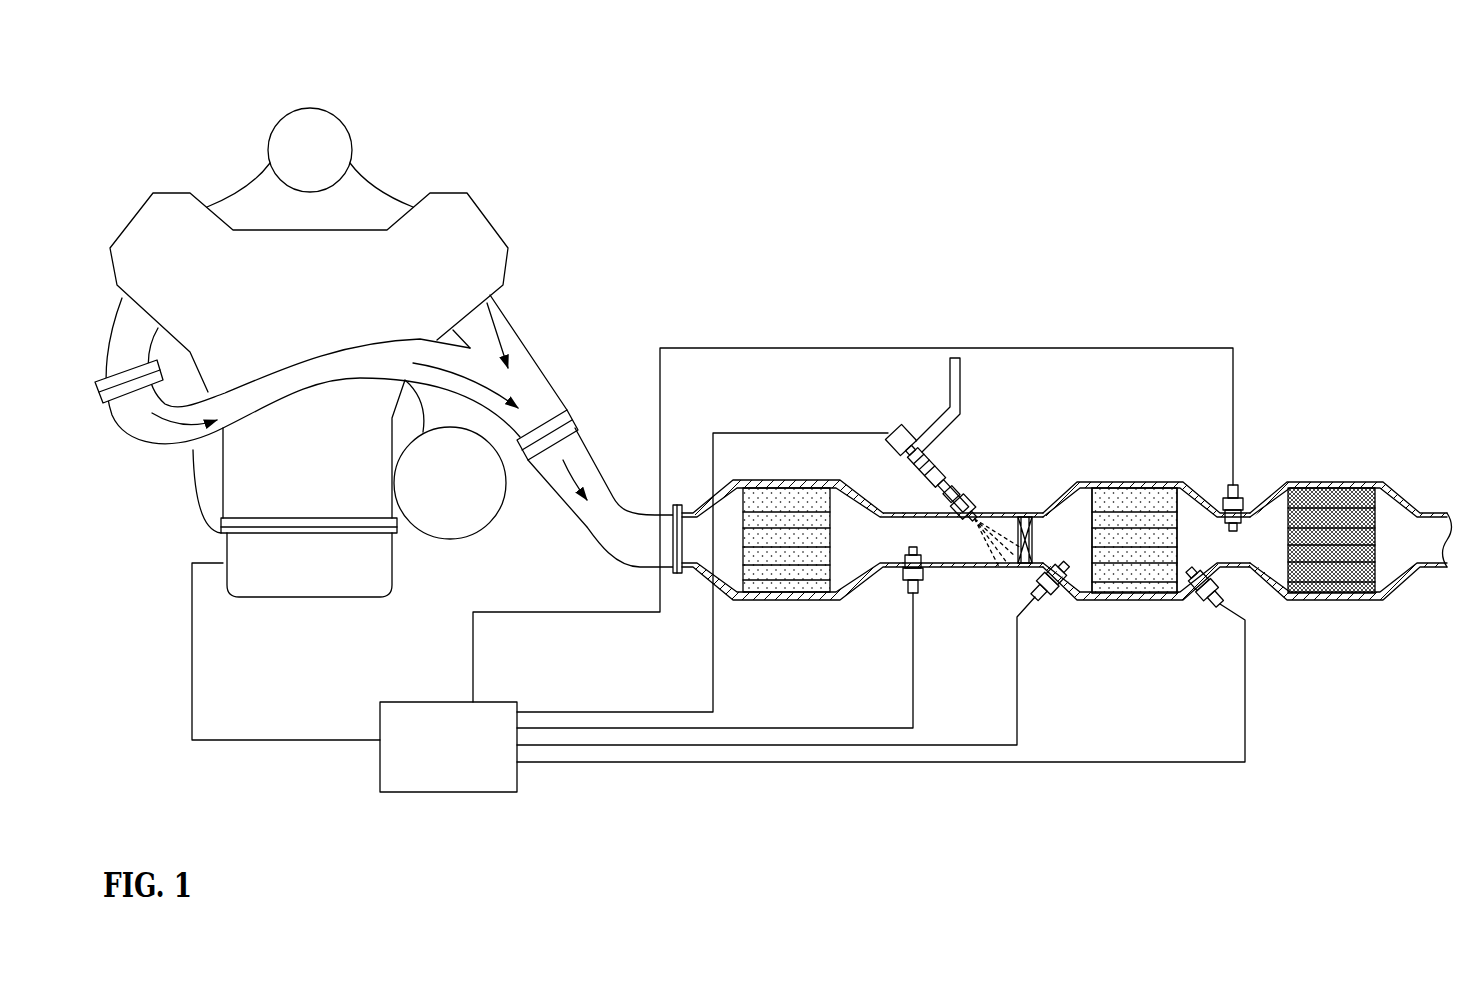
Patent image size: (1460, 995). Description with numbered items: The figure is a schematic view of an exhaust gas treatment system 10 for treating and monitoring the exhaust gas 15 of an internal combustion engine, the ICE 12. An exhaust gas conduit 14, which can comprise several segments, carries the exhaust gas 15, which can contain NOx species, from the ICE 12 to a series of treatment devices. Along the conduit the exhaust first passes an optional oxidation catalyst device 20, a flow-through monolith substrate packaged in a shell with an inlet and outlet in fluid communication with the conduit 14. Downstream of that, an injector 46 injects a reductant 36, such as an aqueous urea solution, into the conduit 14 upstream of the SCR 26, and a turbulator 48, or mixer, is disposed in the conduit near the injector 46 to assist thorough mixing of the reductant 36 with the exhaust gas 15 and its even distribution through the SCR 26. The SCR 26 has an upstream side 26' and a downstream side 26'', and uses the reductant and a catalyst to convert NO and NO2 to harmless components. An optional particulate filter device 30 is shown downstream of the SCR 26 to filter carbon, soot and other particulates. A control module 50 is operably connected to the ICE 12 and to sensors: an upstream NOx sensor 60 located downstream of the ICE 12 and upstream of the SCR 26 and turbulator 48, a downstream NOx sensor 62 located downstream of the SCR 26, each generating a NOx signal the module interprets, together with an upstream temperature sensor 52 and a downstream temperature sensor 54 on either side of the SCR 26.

The exhaust gas treatment system 10 is at (1207, 282).
The ICE 12 is at (445, 195).
The exhaust gas conduit 14 is at (530, 358).
The exhaust gas 15 is at (562, 460).
The oxidation catalyst device 20 is at (787, 507).
The SCR 26 is at (1146, 520).
The upstream side 26' is at (1105, 571).
The downstream side 26'' is at (1169, 571).
The particulate filter device 30 is at (1333, 508).
The reductant 36 is at (987, 517).
The injector 46 is at (943, 466).
The turbulator 48 is at (1033, 547).
The control module 50 is at (403, 700).
The upstream temperature sensor 52 is at (1047, 590).
The downstream temperature sensor 54 is at (1212, 605).
The upstream NOx sensor 60 is at (923, 578).
The downstream NOx sensor 62 is at (1243, 488).